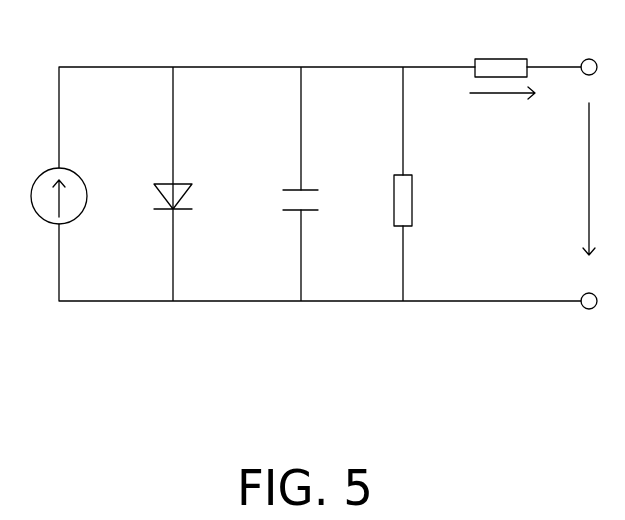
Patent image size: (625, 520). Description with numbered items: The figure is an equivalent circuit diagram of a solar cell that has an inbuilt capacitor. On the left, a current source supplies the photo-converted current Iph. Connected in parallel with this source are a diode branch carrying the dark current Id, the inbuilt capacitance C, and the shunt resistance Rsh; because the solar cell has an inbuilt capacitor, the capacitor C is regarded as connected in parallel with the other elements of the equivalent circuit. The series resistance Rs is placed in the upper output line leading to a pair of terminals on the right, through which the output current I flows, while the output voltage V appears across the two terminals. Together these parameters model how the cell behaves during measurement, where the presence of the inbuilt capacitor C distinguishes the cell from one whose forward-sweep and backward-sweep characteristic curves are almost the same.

The photo-converted current Iph is at (77, 168).
The dark current Id is at (186, 90).
The inbuilt capacitance C is at (315, 203).
The shunt resistance Rsh is at (427, 200).
The series resistance Rs is at (501, 46).
The output current I is at (502, 111).
The output voltage V is at (602, 179).